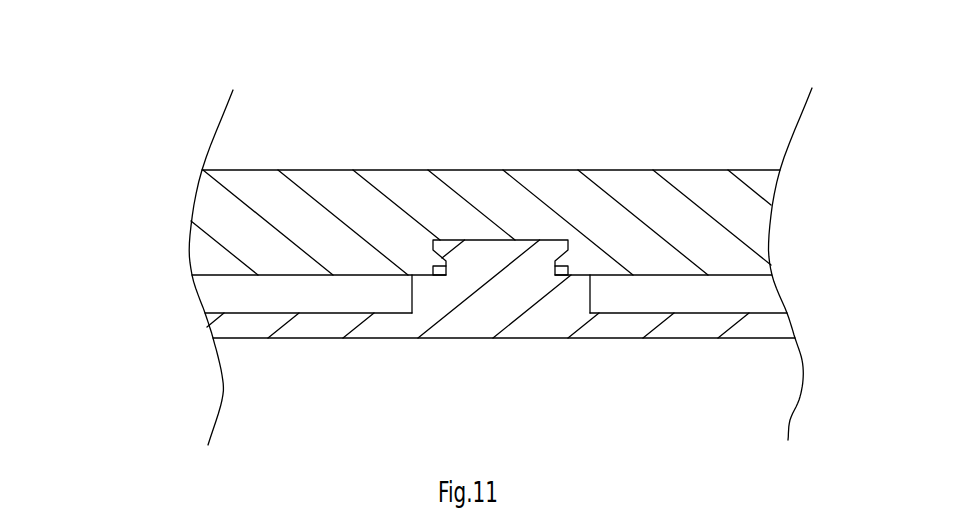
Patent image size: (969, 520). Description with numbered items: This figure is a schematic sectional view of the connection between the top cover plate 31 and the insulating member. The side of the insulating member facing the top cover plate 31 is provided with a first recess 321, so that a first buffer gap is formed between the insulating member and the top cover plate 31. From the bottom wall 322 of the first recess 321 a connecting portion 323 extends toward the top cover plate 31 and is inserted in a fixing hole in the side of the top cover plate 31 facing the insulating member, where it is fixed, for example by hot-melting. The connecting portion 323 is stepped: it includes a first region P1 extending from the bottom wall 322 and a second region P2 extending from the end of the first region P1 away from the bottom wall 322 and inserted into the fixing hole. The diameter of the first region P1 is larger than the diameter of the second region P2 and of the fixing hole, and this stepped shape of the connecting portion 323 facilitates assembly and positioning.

The top cover plate 31 is at (485, 183).
The first recess 321 is at (222, 290).
The bottom wall 322 is at (687, 313).
The connecting portion 323 is at (482, 357).
The first region P1 is at (547, 423).
The second region P2 is at (500, 253).